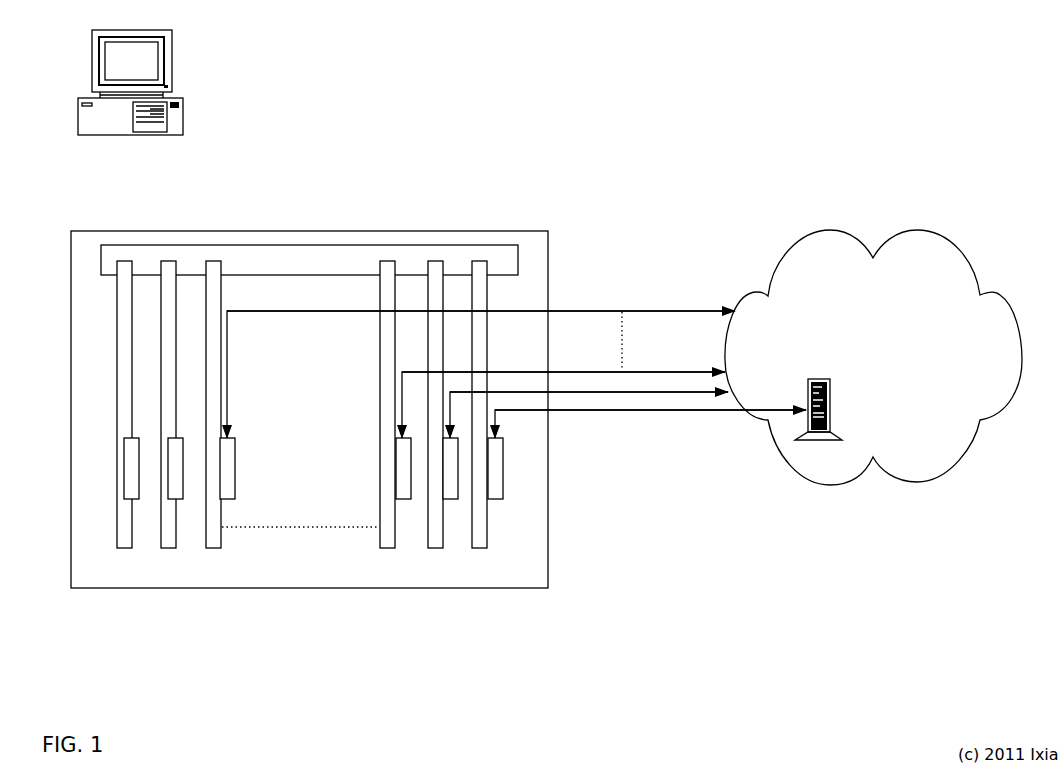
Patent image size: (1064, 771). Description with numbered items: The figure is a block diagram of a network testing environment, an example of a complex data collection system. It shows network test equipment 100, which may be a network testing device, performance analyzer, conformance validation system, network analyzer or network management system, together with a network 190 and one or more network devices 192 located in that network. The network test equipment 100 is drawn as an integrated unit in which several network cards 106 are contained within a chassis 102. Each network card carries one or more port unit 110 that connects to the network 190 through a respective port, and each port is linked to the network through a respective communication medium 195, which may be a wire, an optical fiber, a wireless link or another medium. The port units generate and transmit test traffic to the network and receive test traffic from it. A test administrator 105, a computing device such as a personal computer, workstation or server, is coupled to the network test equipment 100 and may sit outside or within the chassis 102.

The network test equipment 100 is at (488, 52).
The chassis 102 is at (413, 231).
The test administrator 105 is at (310, 222).
The network cards 106 is at (499, 550).
The port unit 110 is at (495, 499).
The network 190 is at (873, 357).
The network device 192 is at (830, 410).
The communication medium 195 is at (607, 410).